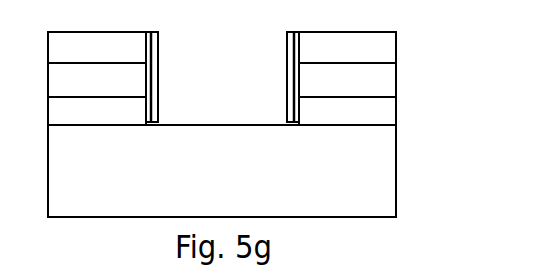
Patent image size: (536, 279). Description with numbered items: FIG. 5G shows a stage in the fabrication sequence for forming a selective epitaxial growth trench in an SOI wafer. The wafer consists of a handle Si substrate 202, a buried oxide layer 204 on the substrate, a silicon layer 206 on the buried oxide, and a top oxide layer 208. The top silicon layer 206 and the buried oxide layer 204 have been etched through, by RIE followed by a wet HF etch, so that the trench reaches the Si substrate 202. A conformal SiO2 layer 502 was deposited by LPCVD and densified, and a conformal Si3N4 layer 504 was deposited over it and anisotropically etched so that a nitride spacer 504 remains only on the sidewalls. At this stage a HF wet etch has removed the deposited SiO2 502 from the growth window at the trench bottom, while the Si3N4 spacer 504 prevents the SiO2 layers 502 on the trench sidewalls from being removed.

The Si substrate 202 is at (202, 187).
The buried oxide layer 204 is at (73, 122).
The silicon layer 206 is at (73, 89).
The top oxide layer 208 is at (73, 59).
The conformal SiO2 layer 502 is at (158, 55).
The Si3N4 spacer 504 is at (287, 105).